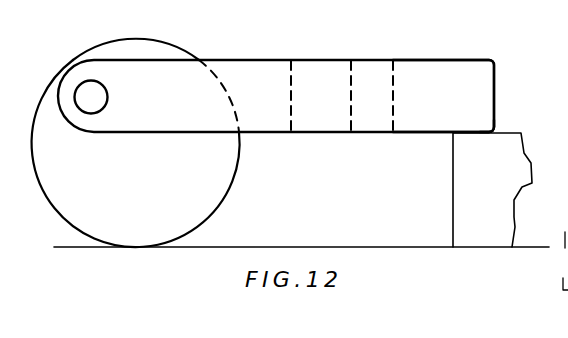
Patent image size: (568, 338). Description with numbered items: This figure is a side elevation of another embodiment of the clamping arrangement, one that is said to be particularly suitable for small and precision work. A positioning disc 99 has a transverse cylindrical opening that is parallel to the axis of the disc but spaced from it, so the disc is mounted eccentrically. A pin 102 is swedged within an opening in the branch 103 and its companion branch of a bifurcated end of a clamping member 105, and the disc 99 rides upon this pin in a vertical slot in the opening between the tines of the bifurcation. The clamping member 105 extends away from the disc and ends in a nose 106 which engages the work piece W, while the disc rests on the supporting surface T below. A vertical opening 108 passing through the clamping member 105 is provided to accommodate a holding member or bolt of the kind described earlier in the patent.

The positioning disc 99 is at (153, 50).
The pin 102 is at (88, 92).
The branch 103 is at (276, 96).
The clamping member 105 is at (433, 77).
The nose 106 is at (476, 122).
The vertical opening 108 is at (371, 70).
The table T is at (320, 230).
The work piece W is at (492, 190).